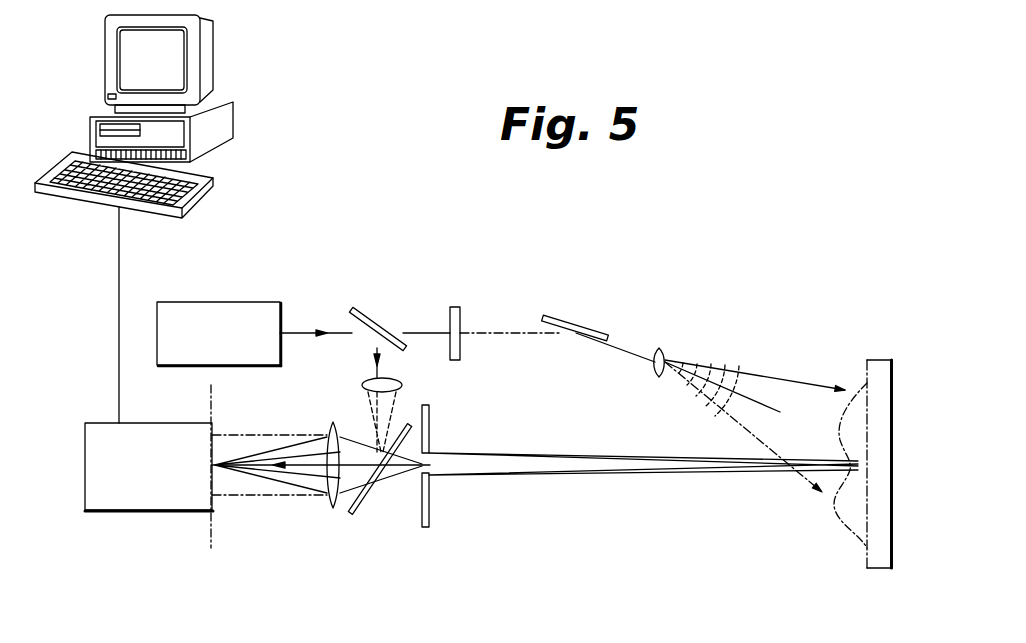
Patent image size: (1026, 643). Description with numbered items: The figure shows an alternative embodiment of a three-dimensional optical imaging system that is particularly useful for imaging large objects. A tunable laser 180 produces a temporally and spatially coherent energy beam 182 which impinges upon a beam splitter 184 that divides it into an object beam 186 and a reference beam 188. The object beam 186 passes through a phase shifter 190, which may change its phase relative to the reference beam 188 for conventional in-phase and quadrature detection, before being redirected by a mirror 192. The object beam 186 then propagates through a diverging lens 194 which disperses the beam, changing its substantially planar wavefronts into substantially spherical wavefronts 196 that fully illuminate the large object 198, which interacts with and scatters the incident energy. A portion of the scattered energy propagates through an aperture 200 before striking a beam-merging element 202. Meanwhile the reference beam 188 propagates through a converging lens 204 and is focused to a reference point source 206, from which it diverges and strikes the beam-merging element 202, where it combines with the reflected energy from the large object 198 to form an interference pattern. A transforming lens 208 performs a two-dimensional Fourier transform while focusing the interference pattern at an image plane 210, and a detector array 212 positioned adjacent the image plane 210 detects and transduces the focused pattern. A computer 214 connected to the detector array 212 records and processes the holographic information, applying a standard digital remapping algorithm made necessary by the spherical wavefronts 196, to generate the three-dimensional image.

The tunable laser 180 is at (222, 302).
The energy beam 182 is at (295, 330).
The beam splitter 184 is at (360, 310).
The object beam 186 is at (424, 330).
The reference beam 188 is at (373, 336).
The phase shifter 190 is at (473, 293).
The mirror 192 is at (558, 318).
The diverging lens 194 is at (655, 363).
The spherical wavefronts 196 is at (682, 403).
The large object 198 is at (872, 358).
The aperture 200 is at (428, 527).
The beam-merging element 202 is at (360, 513).
The converging lens 204 is at (362, 386).
The reference point source 206 is at (406, 410).
The transforming lens 208 is at (335, 508).
The image plane 210 is at (222, 533).
The detector array 212 is at (138, 512).
The computer 214 is at (216, 45).